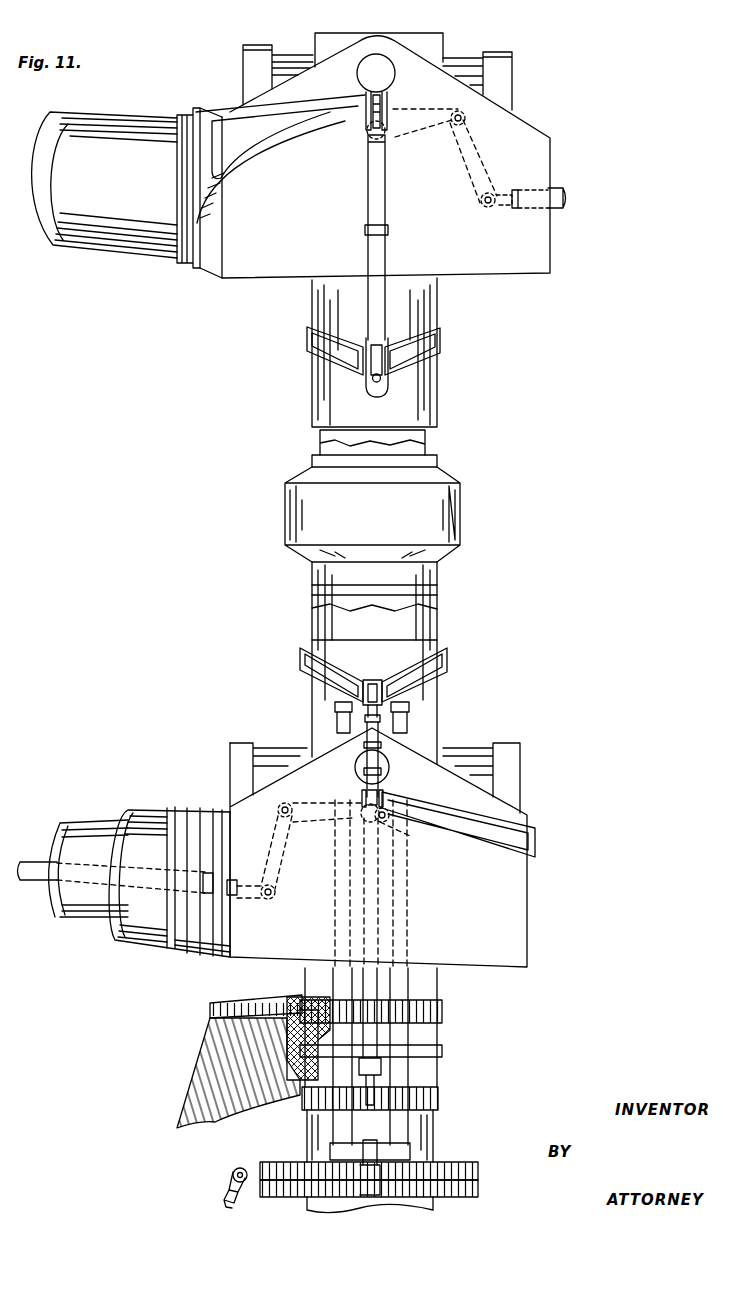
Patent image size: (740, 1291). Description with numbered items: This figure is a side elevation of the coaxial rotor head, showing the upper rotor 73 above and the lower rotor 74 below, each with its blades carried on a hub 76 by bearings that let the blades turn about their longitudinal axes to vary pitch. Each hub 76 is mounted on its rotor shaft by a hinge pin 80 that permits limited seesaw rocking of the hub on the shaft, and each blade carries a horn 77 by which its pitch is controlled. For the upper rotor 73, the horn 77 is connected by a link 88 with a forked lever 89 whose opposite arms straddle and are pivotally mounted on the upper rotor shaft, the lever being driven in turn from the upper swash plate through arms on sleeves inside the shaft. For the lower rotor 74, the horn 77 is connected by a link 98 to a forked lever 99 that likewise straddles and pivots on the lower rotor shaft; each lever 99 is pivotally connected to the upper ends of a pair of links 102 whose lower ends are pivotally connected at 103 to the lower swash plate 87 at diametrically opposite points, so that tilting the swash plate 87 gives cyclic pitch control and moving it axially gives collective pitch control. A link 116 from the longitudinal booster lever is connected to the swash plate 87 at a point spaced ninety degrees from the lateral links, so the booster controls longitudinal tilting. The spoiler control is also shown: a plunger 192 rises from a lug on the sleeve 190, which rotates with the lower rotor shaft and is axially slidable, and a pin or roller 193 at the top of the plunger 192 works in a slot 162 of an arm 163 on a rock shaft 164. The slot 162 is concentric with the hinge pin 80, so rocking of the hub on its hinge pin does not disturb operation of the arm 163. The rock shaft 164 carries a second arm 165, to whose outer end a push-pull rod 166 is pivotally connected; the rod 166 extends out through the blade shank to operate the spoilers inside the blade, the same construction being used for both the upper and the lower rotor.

The upper rotor 73 is at (227, 281).
The lower rotor 74 is at (182, 958).
The hub 76 is at (280, 268).
The horn 77 is at (271, 152).
The hinge pin 80 is at (396, 80).
The lower swash plate 87 is at (466, 1162).
The link 88 is at (386, 203).
The forked lever 89 is at (412, 368).
The link 98 is at (378, 758).
The forked lever 99 is at (403, 680).
The links 102 is at (337, 722).
The pivotal connection 103 is at (385, 1152).
The link 116 is at (222, 1193).
The slot 162 is at (358, 132).
The arm 163 is at (423, 136).
The rock shaft 164 is at (462, 113).
The second arm 165 is at (495, 169).
The push-pull rod 166 is at (565, 200).
The sleeve 190 is at (438, 1127).
The plunger 192 is at (380, 1068).
The pin or roller 193 is at (388, 822).